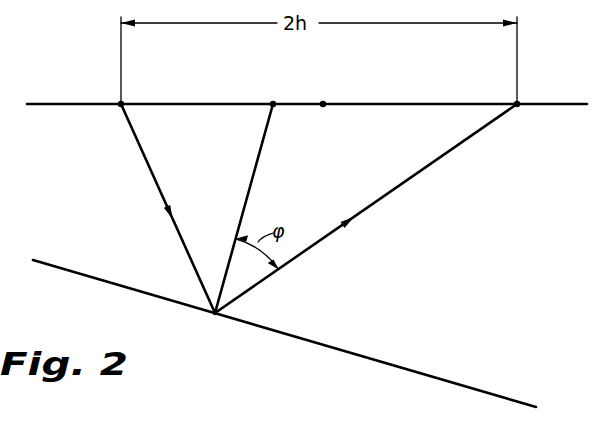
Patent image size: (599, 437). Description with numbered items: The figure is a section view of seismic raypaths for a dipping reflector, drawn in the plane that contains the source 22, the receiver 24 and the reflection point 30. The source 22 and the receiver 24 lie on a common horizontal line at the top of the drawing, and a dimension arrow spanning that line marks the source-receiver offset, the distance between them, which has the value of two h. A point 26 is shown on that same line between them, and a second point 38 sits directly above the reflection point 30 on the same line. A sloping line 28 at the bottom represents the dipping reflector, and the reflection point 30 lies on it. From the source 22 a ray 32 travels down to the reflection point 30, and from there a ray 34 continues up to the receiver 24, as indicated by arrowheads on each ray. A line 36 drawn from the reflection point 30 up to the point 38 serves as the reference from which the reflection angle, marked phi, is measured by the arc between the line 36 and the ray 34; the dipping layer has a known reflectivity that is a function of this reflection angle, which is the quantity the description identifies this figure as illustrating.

The source 22 is at (118, 103).
The receiver 24 is at (519, 103).
The intermediate point on baseline 26 is at (326, 102).
The inclined surface 28 is at (78, 277).
The reflection point 30 is at (215, 314).
The incident ray 32 is at (152, 180).
The reflected ray 34 is at (399, 188).
The surface normal 36 is at (248, 200).
The foot of normal on baseline 38 is at (275, 103).